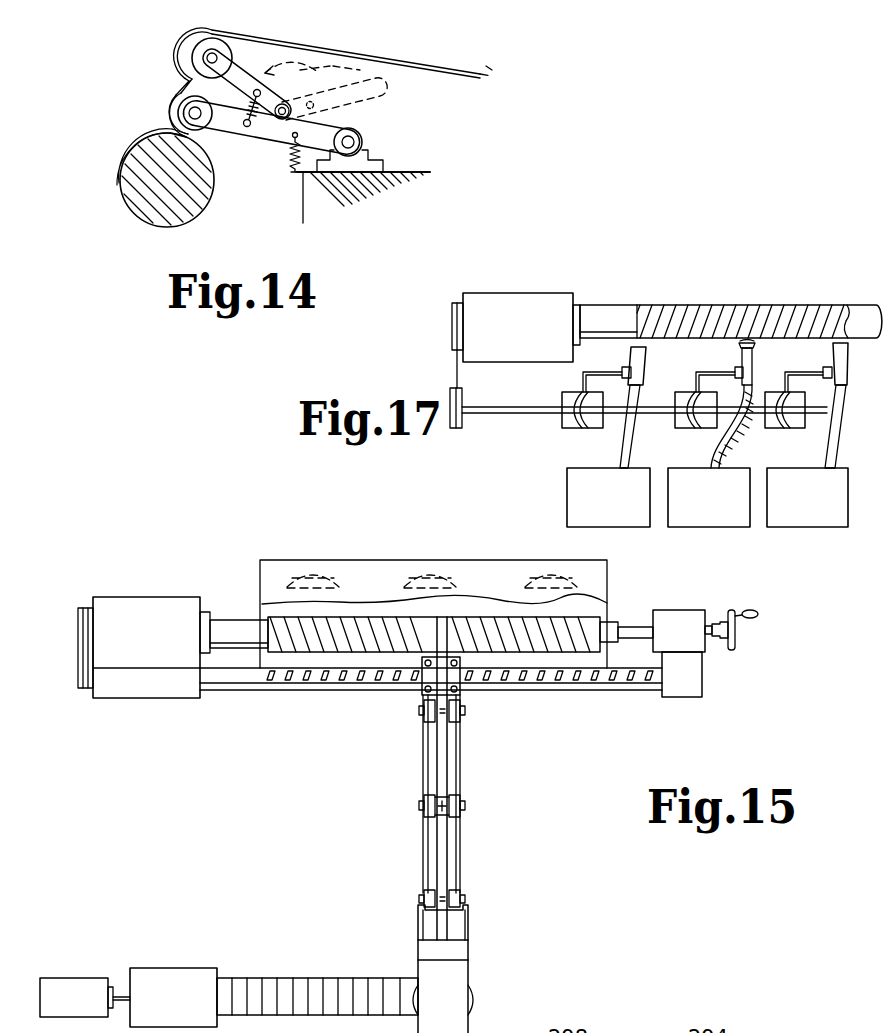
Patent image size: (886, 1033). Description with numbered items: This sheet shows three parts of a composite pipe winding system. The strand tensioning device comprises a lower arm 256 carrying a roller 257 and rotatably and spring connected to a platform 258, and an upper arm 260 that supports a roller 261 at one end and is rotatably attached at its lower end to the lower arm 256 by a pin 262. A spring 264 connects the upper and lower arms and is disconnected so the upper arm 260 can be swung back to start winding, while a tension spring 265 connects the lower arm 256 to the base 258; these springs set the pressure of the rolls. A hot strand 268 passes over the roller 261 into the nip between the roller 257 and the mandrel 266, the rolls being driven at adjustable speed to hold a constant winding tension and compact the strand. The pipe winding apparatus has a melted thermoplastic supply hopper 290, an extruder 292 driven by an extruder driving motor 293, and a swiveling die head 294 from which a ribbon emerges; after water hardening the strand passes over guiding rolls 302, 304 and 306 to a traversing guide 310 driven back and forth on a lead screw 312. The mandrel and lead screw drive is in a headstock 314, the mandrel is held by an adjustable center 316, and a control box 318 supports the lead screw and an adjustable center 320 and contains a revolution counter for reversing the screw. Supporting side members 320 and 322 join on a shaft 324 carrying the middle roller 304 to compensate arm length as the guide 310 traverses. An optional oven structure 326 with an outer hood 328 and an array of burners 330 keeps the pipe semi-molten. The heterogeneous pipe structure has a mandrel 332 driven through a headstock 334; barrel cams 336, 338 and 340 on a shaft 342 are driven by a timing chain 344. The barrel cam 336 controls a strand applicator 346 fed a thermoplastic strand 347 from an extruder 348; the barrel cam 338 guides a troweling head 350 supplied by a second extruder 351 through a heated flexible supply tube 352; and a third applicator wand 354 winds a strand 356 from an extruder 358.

In FIG. 14, the lower arm 256 is at (274, 114).
In FIG. 14, the roller 257 is at (177, 108).
In FIG. 14, the platform 258 is at (357, 197).
In FIG. 14, the upper arm 260 is at (243, 63).
In FIG. 14, the roller 261 is at (196, 53).
In FIG. 14, the pin 262 is at (280, 118).
In FIG. 14, the spring 264 is at (247, 103).
In FIG. 14, the tension spring 265 is at (292, 172).
In FIG. 14, the mandrel 266 is at (158, 207).
In FIG. 14, the hot strand 268 is at (348, 53).
In FIG. 15, the melted thermoplastic supply hopper 290 is at (177, 980).
In FIG. 15, the extruder 292 is at (314, 985).
In FIG. 15, the extruder driving motor 293 is at (77, 987).
In FIG. 15, the swiveling die head 294 is at (457, 975).
In FIG. 15, the guiding roll 302 is at (452, 896).
In FIG. 15, the middle roller 304 is at (440, 812).
In FIG. 15, the guiding roll 306 is at (462, 722).
In FIG. 15, the traversing guide 310 is at (427, 678).
In FIG. 15, the lead screw 312 is at (577, 681).
In FIG. 15, the headstock 314 is at (148, 610).
In FIG. 15, the adjustable center 316 is at (647, 620).
In FIG. 15, the control box 318 is at (680, 680).
In FIG. 15, the supporting side member 320 is at (690, 617).
In FIG. 15, the supporting side member 322 is at (453, 862).
In FIG. 15, the shaft 324 is at (420, 805).
In FIG. 15, the oven structure 326 is at (196, 534).
In FIG. 15, the outer hood 328 is at (268, 587).
In FIG. 15, the burners 330 is at (403, 577).
In FIG. 17, the mandrel 332 is at (607, 317).
In FIG. 17, the headstock 334 is at (517, 298).
In FIG. 17, the barrel cam 336 is at (573, 425).
In FIG. 17, the barrel cam 338 is at (687, 426).
In FIG. 17, the barrel cam 340 is at (803, 426).
In FIG. 17, the shaft 342 is at (510, 408).
In FIG. 17, the timing chain 344 is at (455, 373).
In FIG. 17, the hot thermoplastic strand applicator 346 is at (633, 358).
In FIG. 17, the thermoplastic strand 347 is at (627, 448).
In FIG. 17, the extruder 348 is at (583, 503).
In FIG. 17, the troweling head 350 is at (742, 360).
In FIG. 17, the second extruder 351 is at (728, 520).
In FIG. 17, the flexible supply tube 352 is at (733, 438).
In FIG. 17, the third applicator wand 354 is at (848, 362).
In FIG. 17, the strand 356 is at (835, 447).
In FIG. 17, the extruder 358 is at (820, 520).